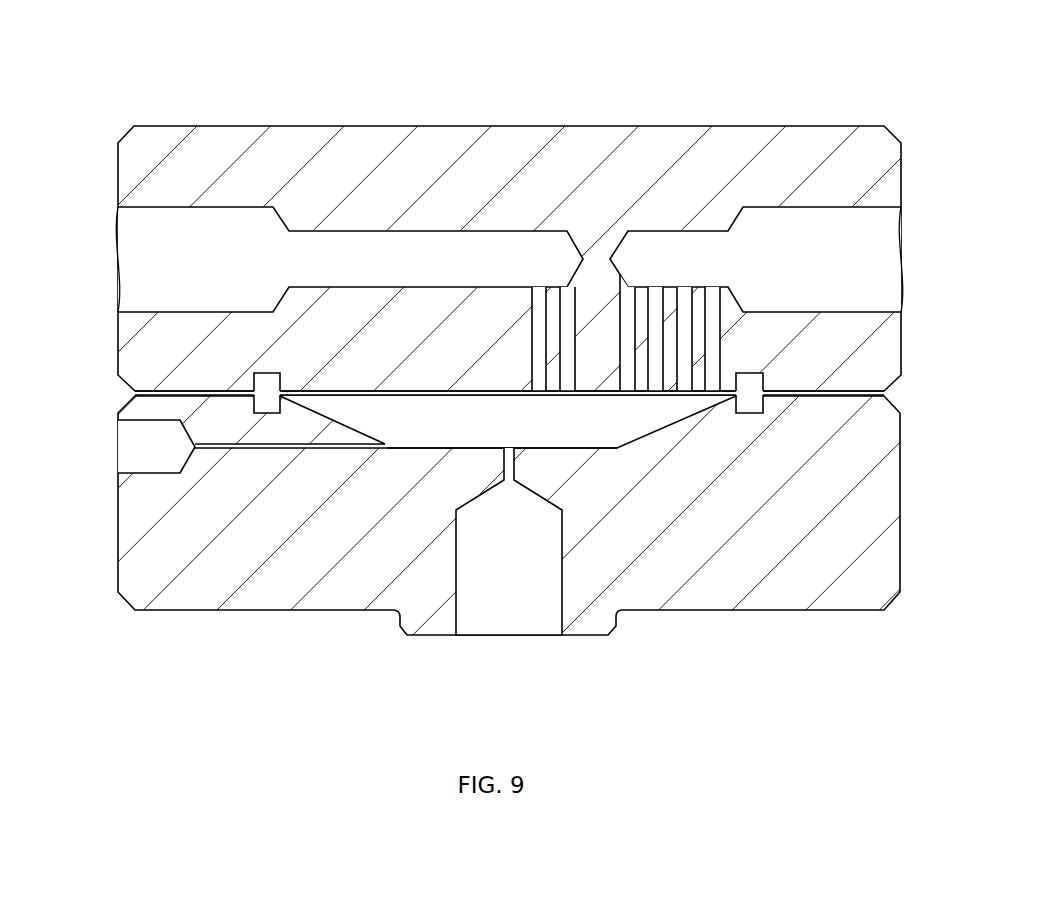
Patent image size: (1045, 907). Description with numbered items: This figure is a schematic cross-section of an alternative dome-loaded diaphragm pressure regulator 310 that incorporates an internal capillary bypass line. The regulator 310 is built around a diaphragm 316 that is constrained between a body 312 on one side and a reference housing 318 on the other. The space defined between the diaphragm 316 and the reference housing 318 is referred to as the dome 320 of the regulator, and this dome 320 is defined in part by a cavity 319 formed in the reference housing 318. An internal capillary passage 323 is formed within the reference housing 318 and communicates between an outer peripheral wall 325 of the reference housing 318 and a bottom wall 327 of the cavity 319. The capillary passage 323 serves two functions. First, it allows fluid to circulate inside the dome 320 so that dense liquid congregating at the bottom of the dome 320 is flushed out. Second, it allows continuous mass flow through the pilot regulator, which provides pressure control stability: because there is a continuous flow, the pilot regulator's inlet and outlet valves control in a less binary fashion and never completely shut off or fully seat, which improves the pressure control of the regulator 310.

The pressure regulator 310 is at (583, 47).
The body 312 is at (760, 135).
The diaphragm 316 is at (883, 393).
The reference housing 318 is at (182, 598).
The cavity 319 is at (560, 447).
The dome 320 is at (618, 418).
The internal capillary passage 323 is at (248, 446).
The outer peripheral wall 325 is at (112, 498).
The bottom wall 327 is at (407, 452).